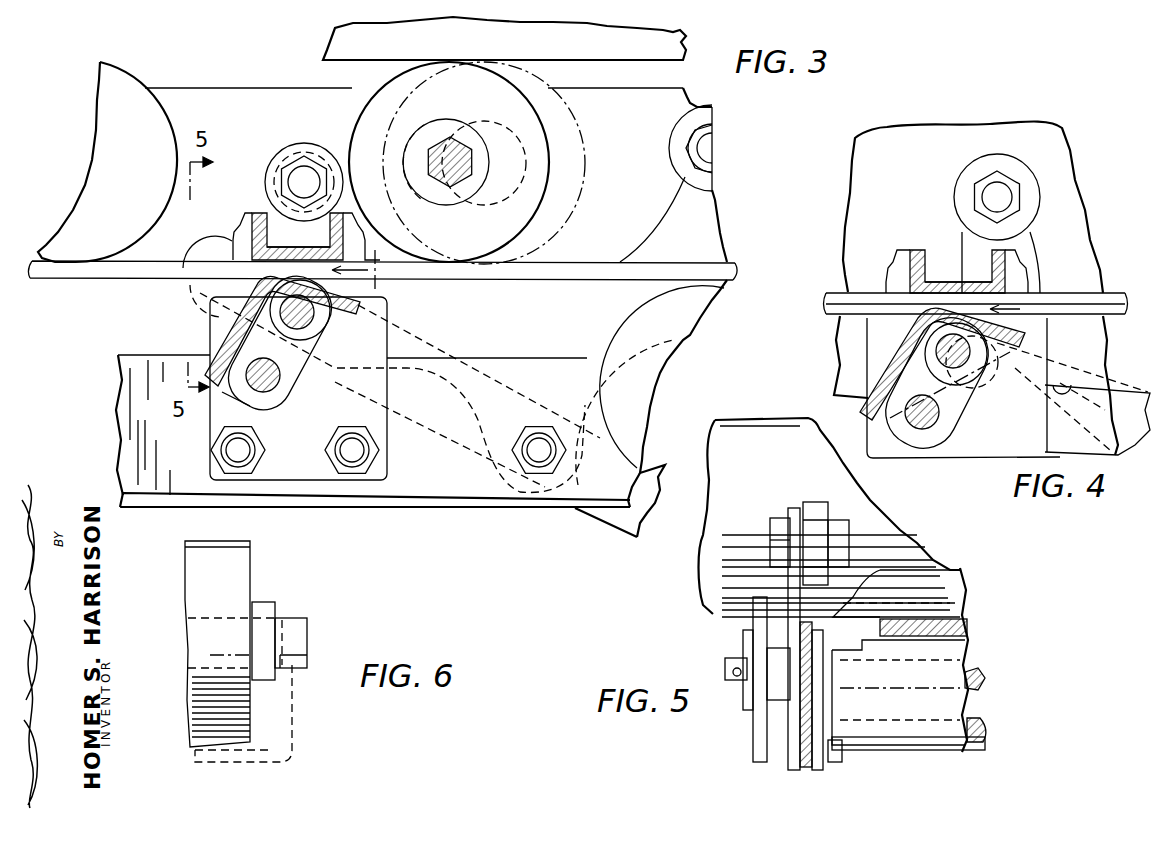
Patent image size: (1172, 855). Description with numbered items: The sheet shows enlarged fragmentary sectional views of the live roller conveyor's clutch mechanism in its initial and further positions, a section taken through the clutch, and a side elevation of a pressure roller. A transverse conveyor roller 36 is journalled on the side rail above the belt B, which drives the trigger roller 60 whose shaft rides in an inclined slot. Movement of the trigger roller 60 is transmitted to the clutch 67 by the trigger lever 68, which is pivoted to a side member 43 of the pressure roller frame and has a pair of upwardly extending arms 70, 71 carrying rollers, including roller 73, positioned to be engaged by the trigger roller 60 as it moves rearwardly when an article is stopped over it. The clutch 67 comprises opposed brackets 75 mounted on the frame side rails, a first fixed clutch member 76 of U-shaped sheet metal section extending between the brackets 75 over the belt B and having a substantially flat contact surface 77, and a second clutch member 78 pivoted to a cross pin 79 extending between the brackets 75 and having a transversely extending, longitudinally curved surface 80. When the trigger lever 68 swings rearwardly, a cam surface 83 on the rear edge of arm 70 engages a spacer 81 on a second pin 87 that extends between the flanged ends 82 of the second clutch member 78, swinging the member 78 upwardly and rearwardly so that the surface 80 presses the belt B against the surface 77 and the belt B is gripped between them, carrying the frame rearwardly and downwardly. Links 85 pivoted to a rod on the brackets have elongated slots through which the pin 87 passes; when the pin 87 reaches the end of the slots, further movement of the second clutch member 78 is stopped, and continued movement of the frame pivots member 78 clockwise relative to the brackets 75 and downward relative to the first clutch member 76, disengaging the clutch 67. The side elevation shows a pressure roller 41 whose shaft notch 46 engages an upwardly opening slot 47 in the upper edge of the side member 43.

In FIG. 3, the conveyor roller 36 is at (113, 73).
In FIG. 3, the belt B is at (86, 281).
In FIG. 3, the trigger roller 60 is at (358, 124).
In FIG. 5, the trigger roller 60 is at (740, 421).
In FIG. 3, the clutch 67 is at (218, 233).
In FIG. 3, the trigger lever 68 is at (680, 212).
In FIG. 3, the arm 70 is at (280, 213).
In FIG. 3, the arm 71 is at (656, 246).
In FIG. 3, the roller 73 is at (677, 135).
In FIG. 5, the roller 73 is at (812, 510).
In FIG. 3, the bracket 75 is at (215, 324).
In FIG. 4, the bracket 75 is at (912, 458).
In FIG. 5, the bracket 75 is at (823, 772).
In FIG. 3, the first fixed clutch member 76 is at (257, 214).
In FIG. 4, the first fixed clutch member 76 is at (917, 250).
In FIG. 5, the first fixed clutch member 76 is at (952, 592).
In FIG. 3, the contact surface 77 is at (281, 252).
In FIG. 4, the contact surface 77 is at (942, 286).
In FIG. 3, the second clutch member 78 is at (213, 348).
In FIG. 4, the second clutch member 78 is at (870, 350).
In FIG. 5, the second clutch member 78 is at (957, 651).
In FIG. 3, the cross pin 79 is at (272, 383).
In FIG. 4, the cross pin 79 is at (933, 426).
In FIG. 5, the cross pin 79 is at (973, 728).
In FIG. 3, the curved surface 80 is at (380, 294).
In FIG. 4, the curved surface 80 is at (1030, 328).
In FIG. 5, the spacer 81 is at (780, 695).
In FIG. 3, the flanged end 82 is at (236, 381).
In FIG. 4, the flanged end 82 is at (945, 395).
In FIG. 5, the flanged end 82 is at (842, 760).
In FIG. 3, the cam surface 83 is at (330, 323).
In FIG. 5, the cam surface 83 is at (792, 750).
In FIG. 3, the link 85 is at (465, 366).
In FIG. 4, the link 85 is at (1130, 388).
In FIG. 5, the link 85 is at (754, 743).
In FIG. 3, the second pin 87 is at (287, 320).
In FIG. 5, the second pin 87 is at (985, 680).
In FIG. 6, the pressure roller 41 is at (240, 552).
In FIG. 5, the side member 43 is at (806, 768).
In FIG. 6, the side member 43 is at (291, 715).
In FIG. 6, the notch 46 is at (294, 620).
In FIG. 6, the slot 47 is at (308, 661).